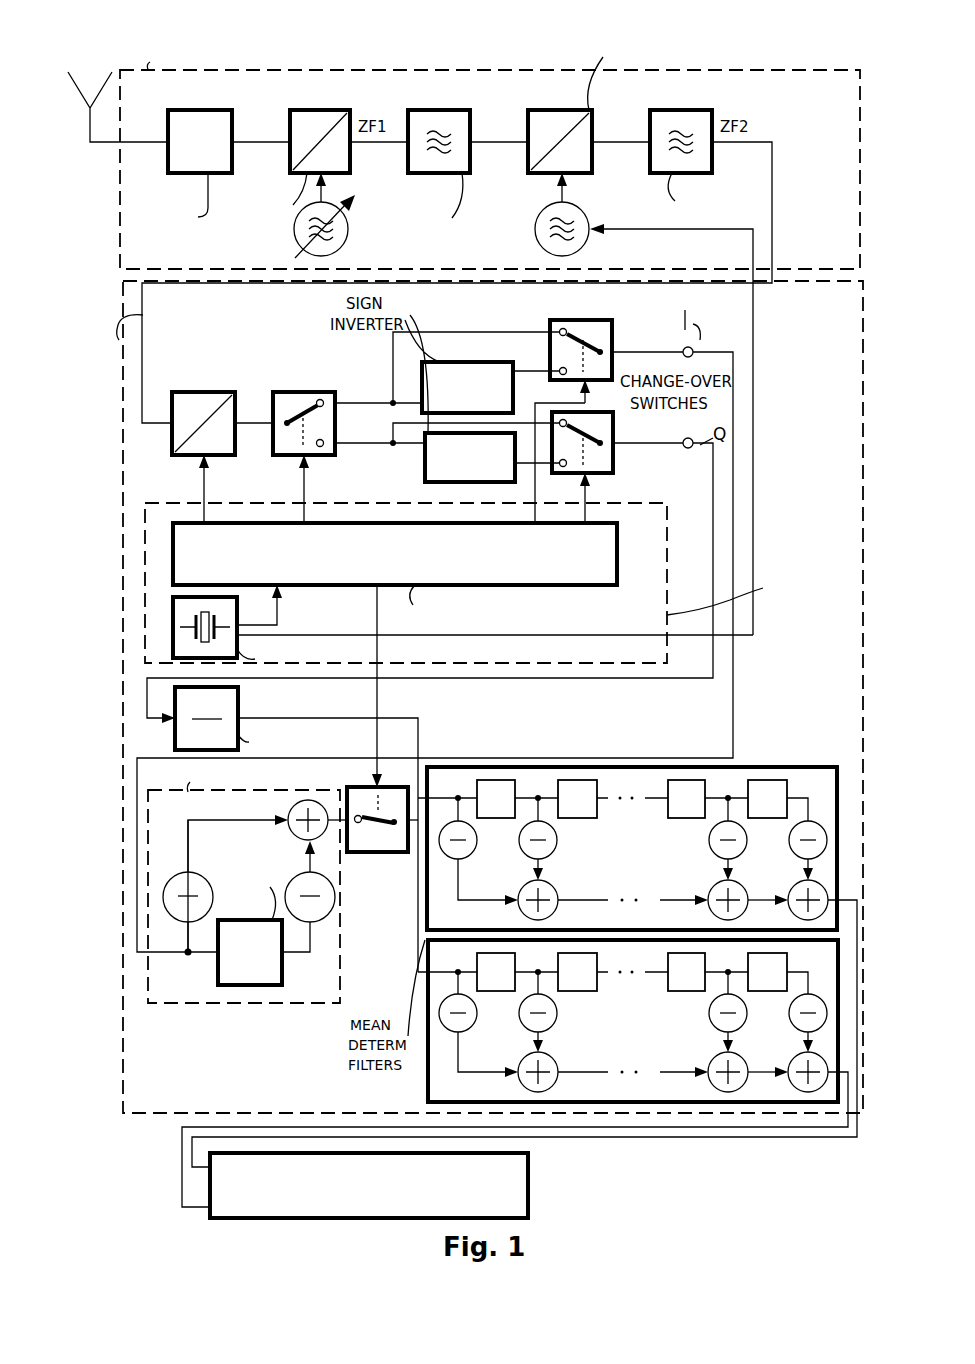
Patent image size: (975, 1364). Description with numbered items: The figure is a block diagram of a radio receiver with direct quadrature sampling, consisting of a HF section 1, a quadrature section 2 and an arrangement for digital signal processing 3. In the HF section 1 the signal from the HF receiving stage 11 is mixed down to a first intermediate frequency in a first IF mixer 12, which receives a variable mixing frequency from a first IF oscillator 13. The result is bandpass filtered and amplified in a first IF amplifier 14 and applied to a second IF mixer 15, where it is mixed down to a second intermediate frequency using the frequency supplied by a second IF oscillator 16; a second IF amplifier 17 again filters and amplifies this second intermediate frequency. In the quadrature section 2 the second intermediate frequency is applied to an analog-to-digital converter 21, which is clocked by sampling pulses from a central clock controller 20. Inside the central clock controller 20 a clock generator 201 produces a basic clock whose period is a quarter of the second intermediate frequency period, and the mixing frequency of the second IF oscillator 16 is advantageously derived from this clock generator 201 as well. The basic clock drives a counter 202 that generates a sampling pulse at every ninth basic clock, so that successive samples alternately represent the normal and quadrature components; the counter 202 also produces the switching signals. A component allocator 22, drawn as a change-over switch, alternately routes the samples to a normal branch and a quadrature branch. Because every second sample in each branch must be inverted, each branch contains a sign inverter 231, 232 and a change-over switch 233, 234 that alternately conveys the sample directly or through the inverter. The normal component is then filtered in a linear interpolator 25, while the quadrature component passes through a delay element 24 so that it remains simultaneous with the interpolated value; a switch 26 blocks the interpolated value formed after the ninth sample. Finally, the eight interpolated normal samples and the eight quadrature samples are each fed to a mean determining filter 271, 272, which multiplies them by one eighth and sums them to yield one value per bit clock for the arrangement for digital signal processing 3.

The HF section 1 is at (802, 210).
The quadrature section 2 is at (793, 398).
The arrangement for digital signal processing 3 is at (482, 1182).
The HF receiving stage 11 is at (211, 128).
The first IF mixer 12 is at (332, 124).
The first IF oscillator 13 is at (348, 246).
The first IF amplifier 14 is at (449, 127).
The second IF mixer 15 is at (569, 122).
The second IF oscillator 16 is at (537, 238).
The second IF amplifier 17 is at (690, 125).
The central clock controller 20 is at (642, 577).
The analog-to-digital converter 21 is at (212, 393).
The component allocator 22 is at (297, 393).
The sign inverter 231 is at (468, 362).
The sign inverter 232 is at (450, 478).
The first change-over switch 233 is at (608, 345).
The second change-over switch 234 is at (595, 465).
The clock generator 201 is at (227, 612).
The counter 202 is at (492, 573).
The delay element 24 is at (226, 697).
The interpolator 25 is at (312, 963).
The switch 26 is at (378, 852).
The mean determining filter 271 is at (827, 790).
The mean determining filter 272 is at (790, 1085).